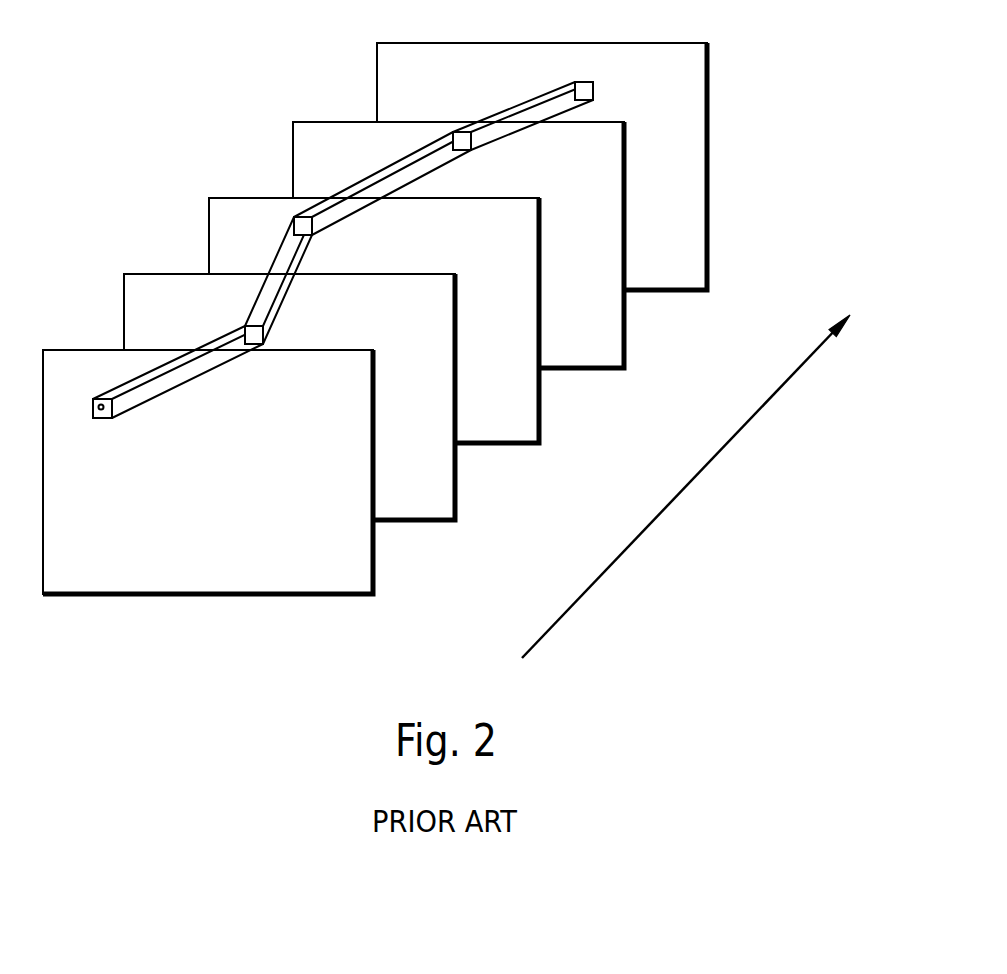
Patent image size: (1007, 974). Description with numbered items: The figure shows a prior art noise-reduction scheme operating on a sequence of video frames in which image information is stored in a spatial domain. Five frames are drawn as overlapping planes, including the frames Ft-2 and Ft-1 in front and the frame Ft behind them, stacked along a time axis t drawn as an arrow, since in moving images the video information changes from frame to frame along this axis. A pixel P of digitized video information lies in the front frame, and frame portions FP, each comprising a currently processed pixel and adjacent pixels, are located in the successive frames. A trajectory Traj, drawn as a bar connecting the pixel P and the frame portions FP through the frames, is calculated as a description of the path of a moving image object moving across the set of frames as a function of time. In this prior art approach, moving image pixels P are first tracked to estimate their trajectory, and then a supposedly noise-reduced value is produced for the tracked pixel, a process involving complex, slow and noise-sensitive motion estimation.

The pixel P is at (102, 419).
The frame portion FP is at (263, 341).
The trajectory Traj is at (450, 161).
The video frame Ft-2 is at (231, 487).
The video frame Ft-1 is at (314, 411).
The video frame Ft is at (389, 331).
The time axis t is at (686, 486).